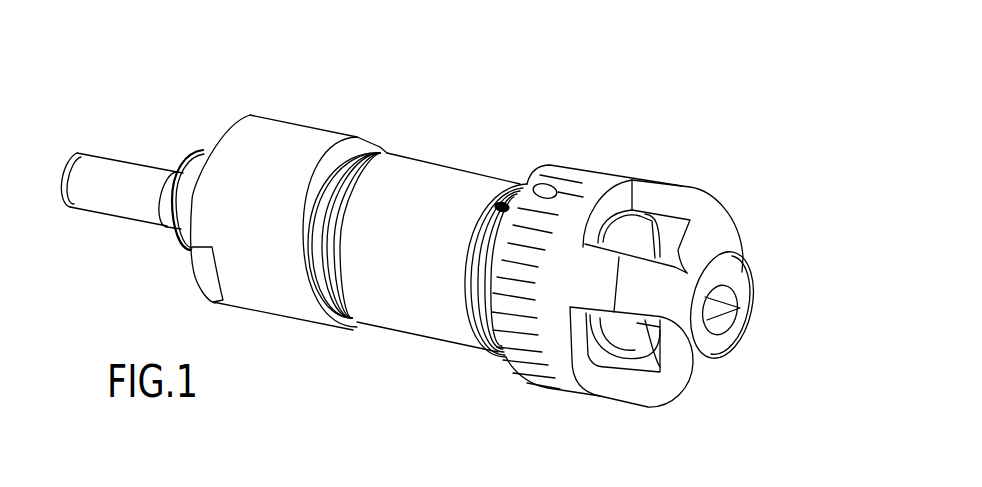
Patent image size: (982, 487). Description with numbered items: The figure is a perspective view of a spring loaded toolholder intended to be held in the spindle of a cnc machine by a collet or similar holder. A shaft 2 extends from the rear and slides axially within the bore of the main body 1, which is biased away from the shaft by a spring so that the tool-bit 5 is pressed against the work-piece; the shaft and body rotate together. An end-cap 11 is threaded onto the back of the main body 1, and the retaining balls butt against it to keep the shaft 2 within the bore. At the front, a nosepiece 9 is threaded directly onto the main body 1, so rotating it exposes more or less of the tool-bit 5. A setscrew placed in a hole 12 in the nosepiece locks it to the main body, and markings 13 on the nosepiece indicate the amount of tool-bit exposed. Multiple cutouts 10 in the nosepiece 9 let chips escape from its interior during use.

The main body 1 is at (460, 188).
The shaft 2 is at (105, 170).
The tool-bit 5 is at (700, 285).
The nosepiece 9 is at (729, 212).
The cutouts 10 is at (703, 248).
The end-cap 11 is at (303, 145).
The hole 12 is at (547, 189).
The markings 13 is at (512, 350).